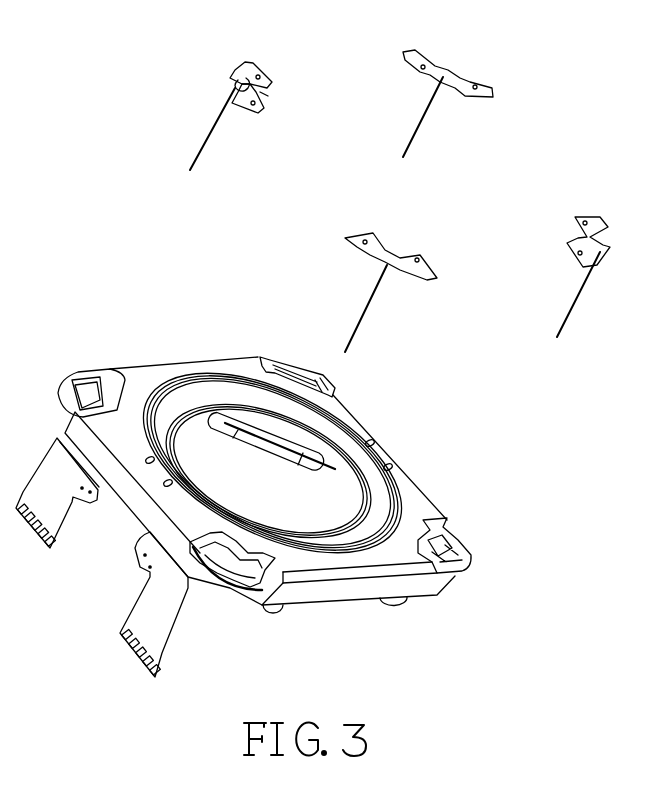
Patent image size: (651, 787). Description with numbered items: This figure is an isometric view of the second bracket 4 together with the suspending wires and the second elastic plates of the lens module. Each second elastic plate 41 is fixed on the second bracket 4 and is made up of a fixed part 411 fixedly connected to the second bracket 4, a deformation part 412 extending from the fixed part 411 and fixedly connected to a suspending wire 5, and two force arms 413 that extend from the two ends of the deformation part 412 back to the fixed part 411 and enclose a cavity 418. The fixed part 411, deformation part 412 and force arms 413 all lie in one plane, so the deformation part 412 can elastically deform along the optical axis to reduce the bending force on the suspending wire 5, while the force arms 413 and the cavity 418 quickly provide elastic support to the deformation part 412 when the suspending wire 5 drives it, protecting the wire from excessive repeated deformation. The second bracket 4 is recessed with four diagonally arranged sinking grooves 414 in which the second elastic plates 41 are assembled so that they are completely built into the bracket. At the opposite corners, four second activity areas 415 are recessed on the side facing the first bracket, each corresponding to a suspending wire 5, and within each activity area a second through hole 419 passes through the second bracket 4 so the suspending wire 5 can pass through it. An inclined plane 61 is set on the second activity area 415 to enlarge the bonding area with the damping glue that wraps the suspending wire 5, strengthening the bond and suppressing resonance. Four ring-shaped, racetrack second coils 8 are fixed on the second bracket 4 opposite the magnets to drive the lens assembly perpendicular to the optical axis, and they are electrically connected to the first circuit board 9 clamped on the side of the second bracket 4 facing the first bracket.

The second bracket 4 is at (413, 497).
The second elastic plate 41 is at (166, 57).
The fixed part 411 is at (250, 60).
The force arm 413 is at (240, 75).
The deformation part 412 is at (233, 80).
The cavity 418 is at (260, 87).
The suspending wire 5 is at (210, 127).
The sinking groove 414 is at (100, 372).
The second through hole 419 is at (462, 560).
The second activity area 415 is at (218, 598).
The inclined plane 61 is at (258, 608).
The second coil 8 is at (277, 450).
The first circuit board 9 is at (137, 618).